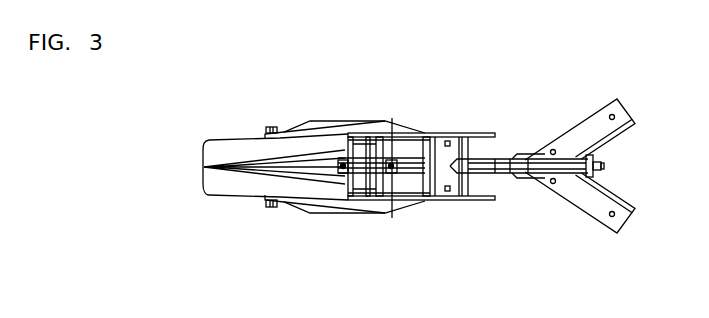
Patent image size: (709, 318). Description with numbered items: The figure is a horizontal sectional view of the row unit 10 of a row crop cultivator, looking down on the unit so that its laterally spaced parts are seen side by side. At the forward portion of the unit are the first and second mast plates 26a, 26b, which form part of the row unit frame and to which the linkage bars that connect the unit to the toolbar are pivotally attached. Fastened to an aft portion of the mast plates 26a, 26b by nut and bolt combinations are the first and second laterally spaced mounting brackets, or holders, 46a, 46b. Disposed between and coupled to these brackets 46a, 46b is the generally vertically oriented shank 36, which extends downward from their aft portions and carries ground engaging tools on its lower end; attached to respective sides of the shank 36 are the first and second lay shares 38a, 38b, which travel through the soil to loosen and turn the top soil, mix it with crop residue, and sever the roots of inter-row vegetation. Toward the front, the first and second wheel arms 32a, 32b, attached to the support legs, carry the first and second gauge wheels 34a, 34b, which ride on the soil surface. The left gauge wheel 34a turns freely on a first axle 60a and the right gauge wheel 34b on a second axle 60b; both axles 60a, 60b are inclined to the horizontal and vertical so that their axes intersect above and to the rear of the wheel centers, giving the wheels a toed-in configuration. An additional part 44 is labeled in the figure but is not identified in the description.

The row unit 10 is at (167, 177).
The first mast plate 26a is at (468, 200).
The second mast plate 26b is at (468, 133).
The first wheel arm 32a is at (332, 213).
The second wheel arm 32b is at (332, 120).
The first gauge wheel 34a is at (216, 205).
The second gauge wheel 34b is at (216, 131).
The shank 36 is at (551, 176).
The first lay share 38a is at (587, 213).
The second lay share 38b is at (590, 117).
The pivot pin 44 is at (341, 201).
The first mounting bracket 46a is at (517, 176).
The second mounting bracket 46b is at (517, 153).
The first axle 60a is at (278, 208).
The second axle 60b is at (276, 126).